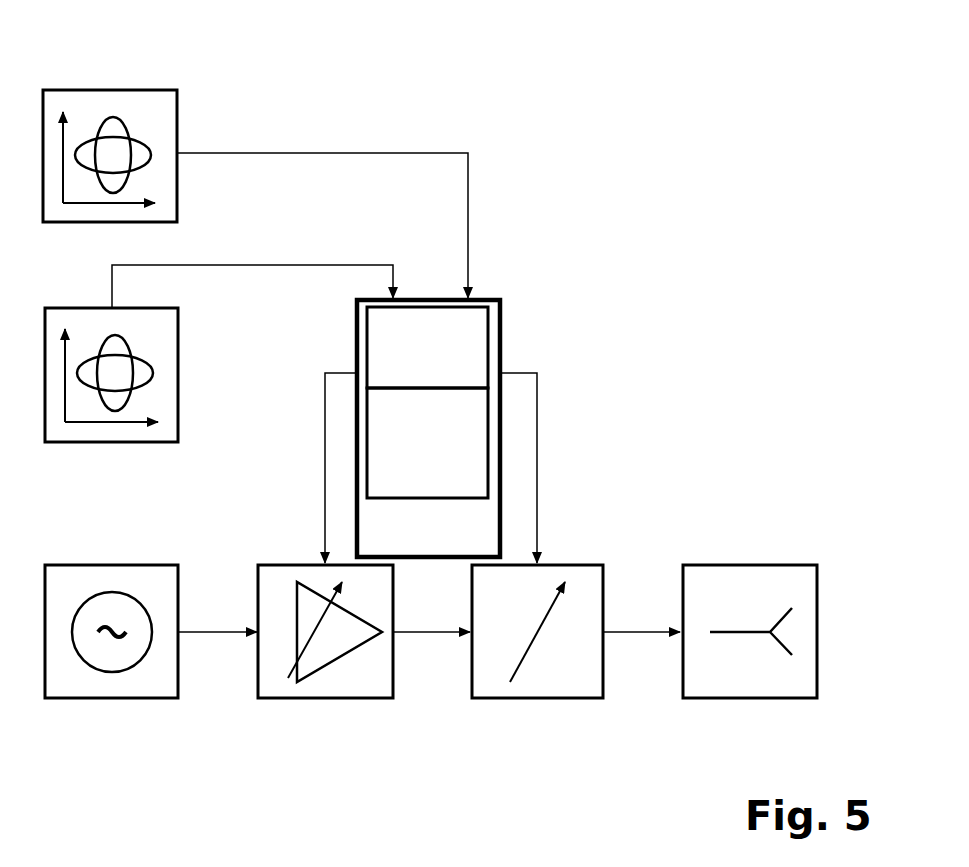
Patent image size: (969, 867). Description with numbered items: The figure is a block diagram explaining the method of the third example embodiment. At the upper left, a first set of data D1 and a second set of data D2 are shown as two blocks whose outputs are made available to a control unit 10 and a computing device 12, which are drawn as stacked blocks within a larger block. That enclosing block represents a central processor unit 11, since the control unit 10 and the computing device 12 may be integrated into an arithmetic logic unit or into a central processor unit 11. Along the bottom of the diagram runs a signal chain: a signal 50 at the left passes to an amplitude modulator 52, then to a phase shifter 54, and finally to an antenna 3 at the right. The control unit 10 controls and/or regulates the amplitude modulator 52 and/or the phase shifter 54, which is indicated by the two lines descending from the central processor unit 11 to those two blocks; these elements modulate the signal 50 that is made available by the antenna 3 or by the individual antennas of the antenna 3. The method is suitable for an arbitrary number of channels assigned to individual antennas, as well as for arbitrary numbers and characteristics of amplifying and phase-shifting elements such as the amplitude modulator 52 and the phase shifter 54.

The first set of data D1 is at (112, 88).
The second set of data D2 is at (62, 306).
The central processor unit 11 is at (430, 298).
The control unit 10 is at (427, 347).
The computing device 12 is at (427, 443).
The signal 50 is at (111, 700).
The amplitude modulator 52 is at (325, 700).
The phase shifter 54 is at (538, 700).
The antenna 3 is at (750, 700).